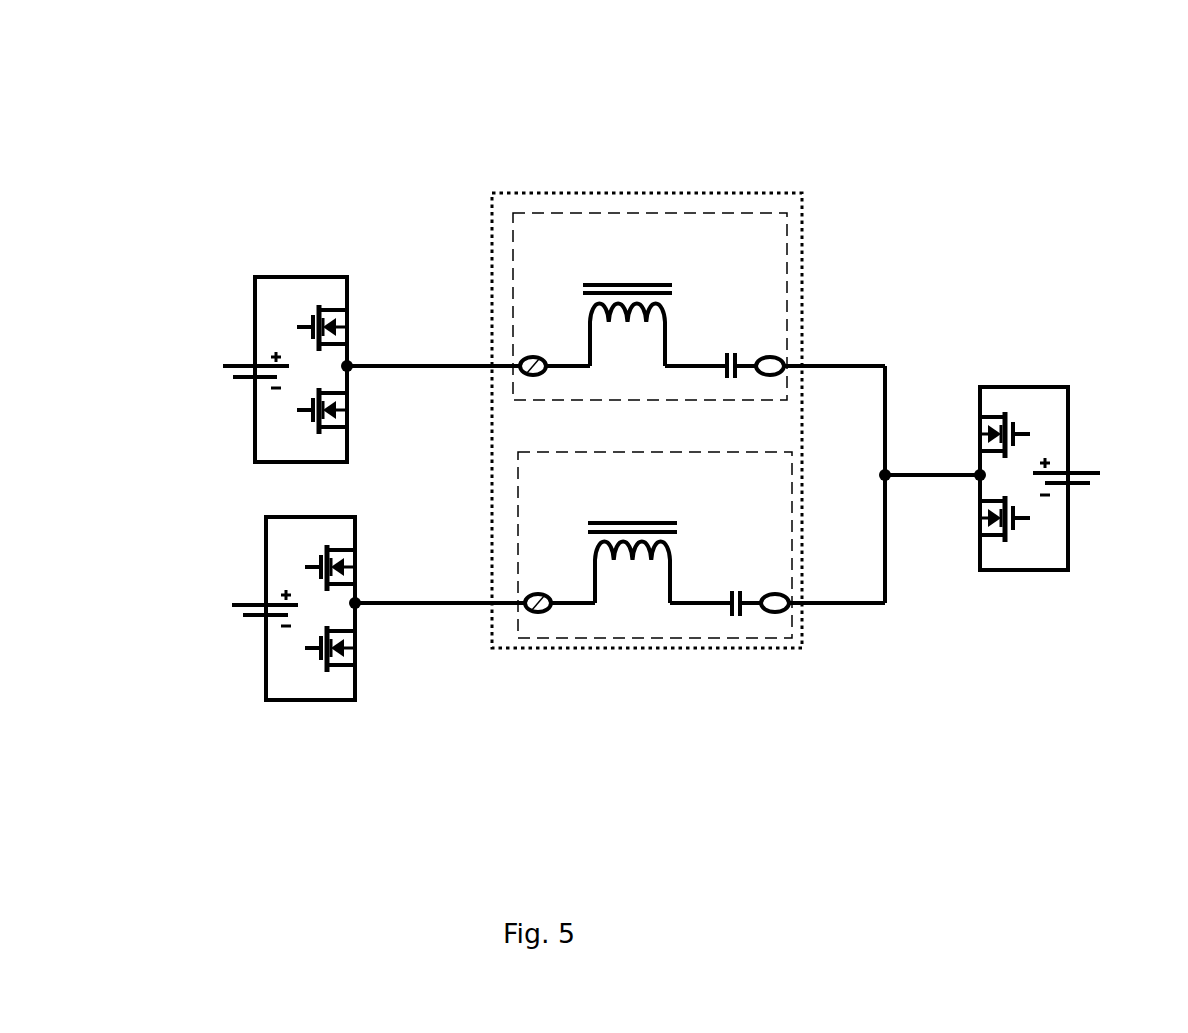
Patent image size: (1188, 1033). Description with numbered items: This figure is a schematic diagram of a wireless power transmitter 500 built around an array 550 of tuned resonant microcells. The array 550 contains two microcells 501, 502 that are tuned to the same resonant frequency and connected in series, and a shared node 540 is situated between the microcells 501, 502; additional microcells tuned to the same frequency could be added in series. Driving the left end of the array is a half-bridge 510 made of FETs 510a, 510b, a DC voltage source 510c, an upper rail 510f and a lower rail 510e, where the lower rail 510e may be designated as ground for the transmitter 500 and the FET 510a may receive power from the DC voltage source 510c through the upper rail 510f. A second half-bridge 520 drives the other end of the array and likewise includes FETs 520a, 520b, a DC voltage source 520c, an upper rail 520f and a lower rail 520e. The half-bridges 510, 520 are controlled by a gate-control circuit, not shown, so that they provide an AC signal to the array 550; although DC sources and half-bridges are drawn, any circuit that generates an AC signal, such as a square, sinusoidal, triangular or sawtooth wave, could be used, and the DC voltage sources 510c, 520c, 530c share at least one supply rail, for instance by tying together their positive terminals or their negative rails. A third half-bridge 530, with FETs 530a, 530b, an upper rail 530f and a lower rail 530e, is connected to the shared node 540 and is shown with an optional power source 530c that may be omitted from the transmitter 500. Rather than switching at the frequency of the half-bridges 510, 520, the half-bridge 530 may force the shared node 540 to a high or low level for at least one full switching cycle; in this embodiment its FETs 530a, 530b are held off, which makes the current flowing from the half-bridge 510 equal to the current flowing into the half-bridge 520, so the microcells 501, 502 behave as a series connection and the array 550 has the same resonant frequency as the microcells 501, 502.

The wireless power transmitter 500 is at (309, 86).
The microcell 501 is at (660, 215).
The microcell 502 is at (612, 647).
The half-bridge 510 is at (305, 255).
The FET 510a is at (350, 333).
The FET 510b is at (350, 400).
The DC voltage source 510c is at (233, 367).
The lower rail 510e is at (255, 442).
The upper rail 510f is at (255, 303).
The half-bridge 520 is at (297, 707).
The FET 520a is at (357, 572).
The FET 520b is at (357, 643).
The DC voltage source 520c is at (243, 607).
The lower rail 520e is at (266, 680).
The upper rail 520f is at (266, 540).
The half-bridge 530 is at (1035, 375).
The FET 530a is at (975, 440).
The FET 530b is at (975, 508).
The power source 530c is at (1095, 481).
The lower rail 530e is at (1070, 540).
The upper rail 530f is at (1070, 407).
The shared node 540 is at (880, 475).
The array 550 is at (797, 192).